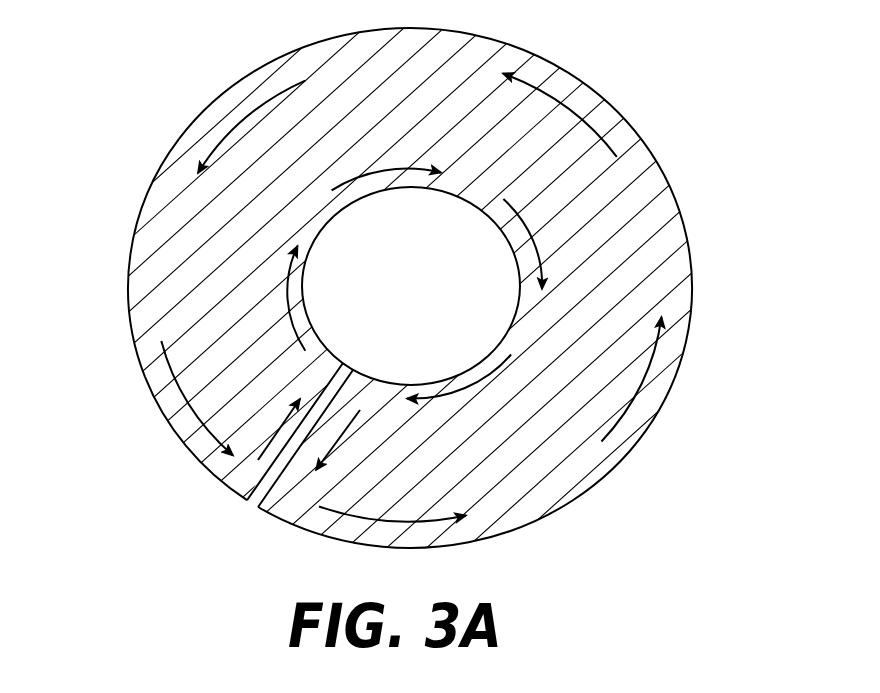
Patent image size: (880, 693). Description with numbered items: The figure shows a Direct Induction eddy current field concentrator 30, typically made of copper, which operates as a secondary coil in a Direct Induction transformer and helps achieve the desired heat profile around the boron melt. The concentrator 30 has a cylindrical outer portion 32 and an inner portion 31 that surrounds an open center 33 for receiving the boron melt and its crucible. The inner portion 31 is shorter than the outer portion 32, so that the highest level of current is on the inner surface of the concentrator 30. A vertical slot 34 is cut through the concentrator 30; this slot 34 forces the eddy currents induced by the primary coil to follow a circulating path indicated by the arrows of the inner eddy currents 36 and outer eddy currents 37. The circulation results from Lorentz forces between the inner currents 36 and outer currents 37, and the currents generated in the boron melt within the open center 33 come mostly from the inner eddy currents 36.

The Direct Induction concentrator 30 is at (194, 58).
The inner portion 31 is at (137, 327).
The outer portion 32 is at (190, 452).
The open center 33 is at (335, 240).
The vertical slot 34 is at (252, 502).
The inner eddy currents 36 is at (480, 390).
The outer eddy currents 37 is at (636, 408).